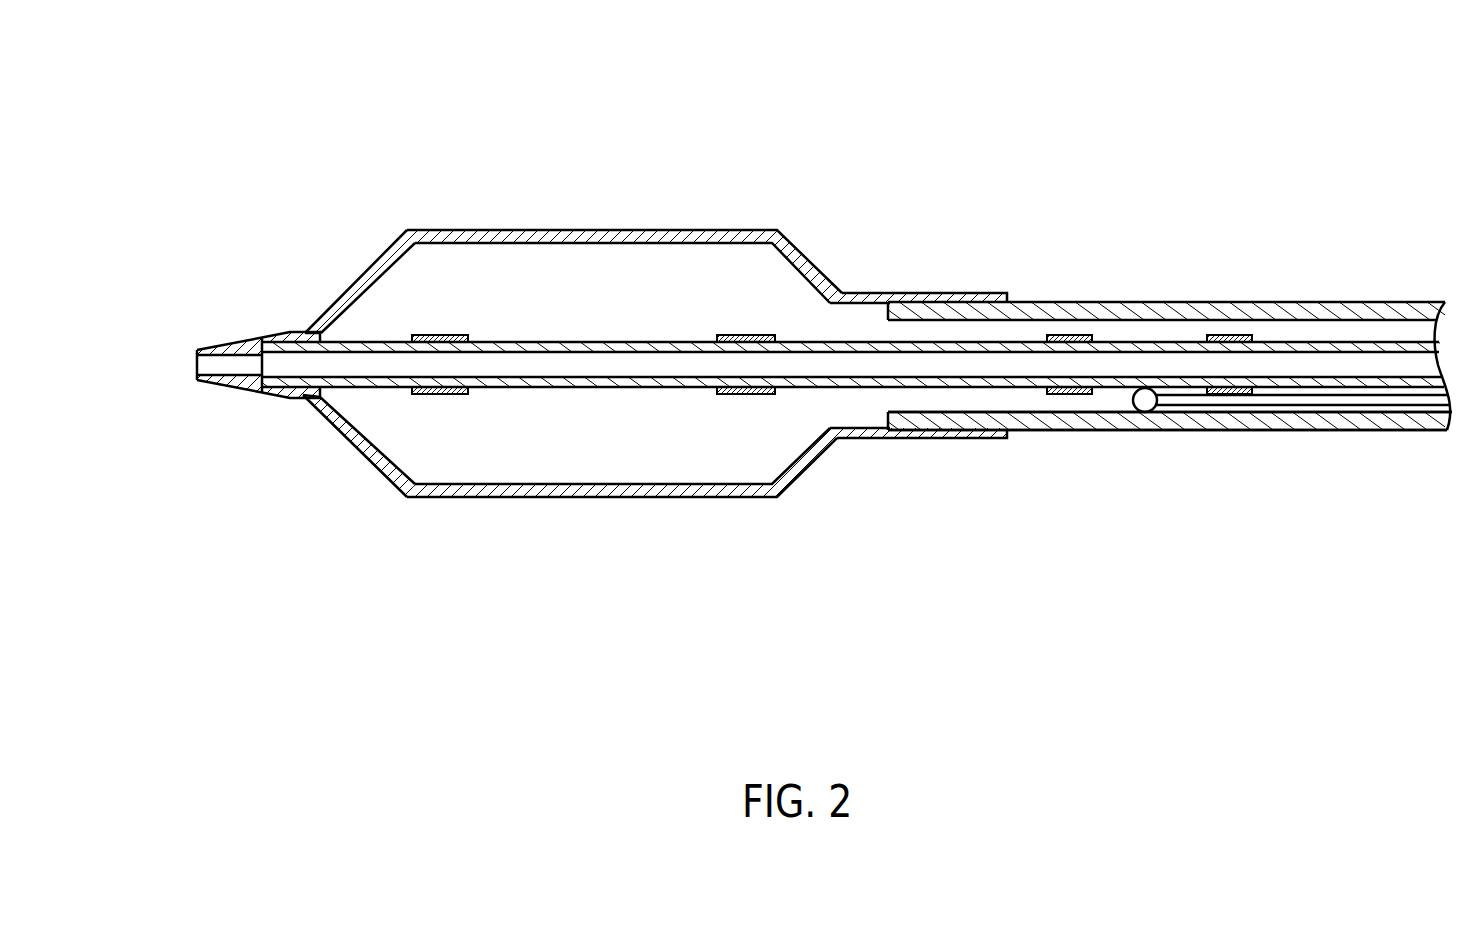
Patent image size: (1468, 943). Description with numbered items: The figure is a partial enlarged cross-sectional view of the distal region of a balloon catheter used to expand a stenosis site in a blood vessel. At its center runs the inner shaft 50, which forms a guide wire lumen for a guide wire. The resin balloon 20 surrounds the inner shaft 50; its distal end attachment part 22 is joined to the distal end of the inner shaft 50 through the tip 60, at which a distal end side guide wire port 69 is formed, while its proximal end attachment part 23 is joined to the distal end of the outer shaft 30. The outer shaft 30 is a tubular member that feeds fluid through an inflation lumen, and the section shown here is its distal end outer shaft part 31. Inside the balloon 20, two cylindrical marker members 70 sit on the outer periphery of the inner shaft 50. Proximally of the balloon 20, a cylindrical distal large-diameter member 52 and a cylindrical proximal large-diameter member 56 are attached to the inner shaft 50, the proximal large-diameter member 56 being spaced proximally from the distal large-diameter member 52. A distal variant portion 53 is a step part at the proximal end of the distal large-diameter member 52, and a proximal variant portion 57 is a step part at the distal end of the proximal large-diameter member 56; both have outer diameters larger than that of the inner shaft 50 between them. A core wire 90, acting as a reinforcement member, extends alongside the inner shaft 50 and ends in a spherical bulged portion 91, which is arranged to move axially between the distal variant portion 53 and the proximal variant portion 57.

The balloon 20 is at (618, 230).
The distal end attachment part 22 is at (347, 283).
The proximal end attachment part 23 is at (920, 293).
The outer shaft 30 is at (1395, 302).
The distal end outer shaft part 31 is at (1418, 430).
The inner shaft 50 is at (863, 387).
The distal large-diameter member 52 is at (1062, 397).
The distal variant portion 53 is at (1090, 335).
The proximal large-diameter member 56 is at (1230, 337).
The proximal variant portion 57 is at (1205, 337).
The tip 60 is at (253, 338).
The distal end side guide wire port 69 is at (197, 365).
The marker members 70 is at (445, 395).
The core wire 90 is at (1315, 395).
The bulged portion 91 is at (1145, 400).